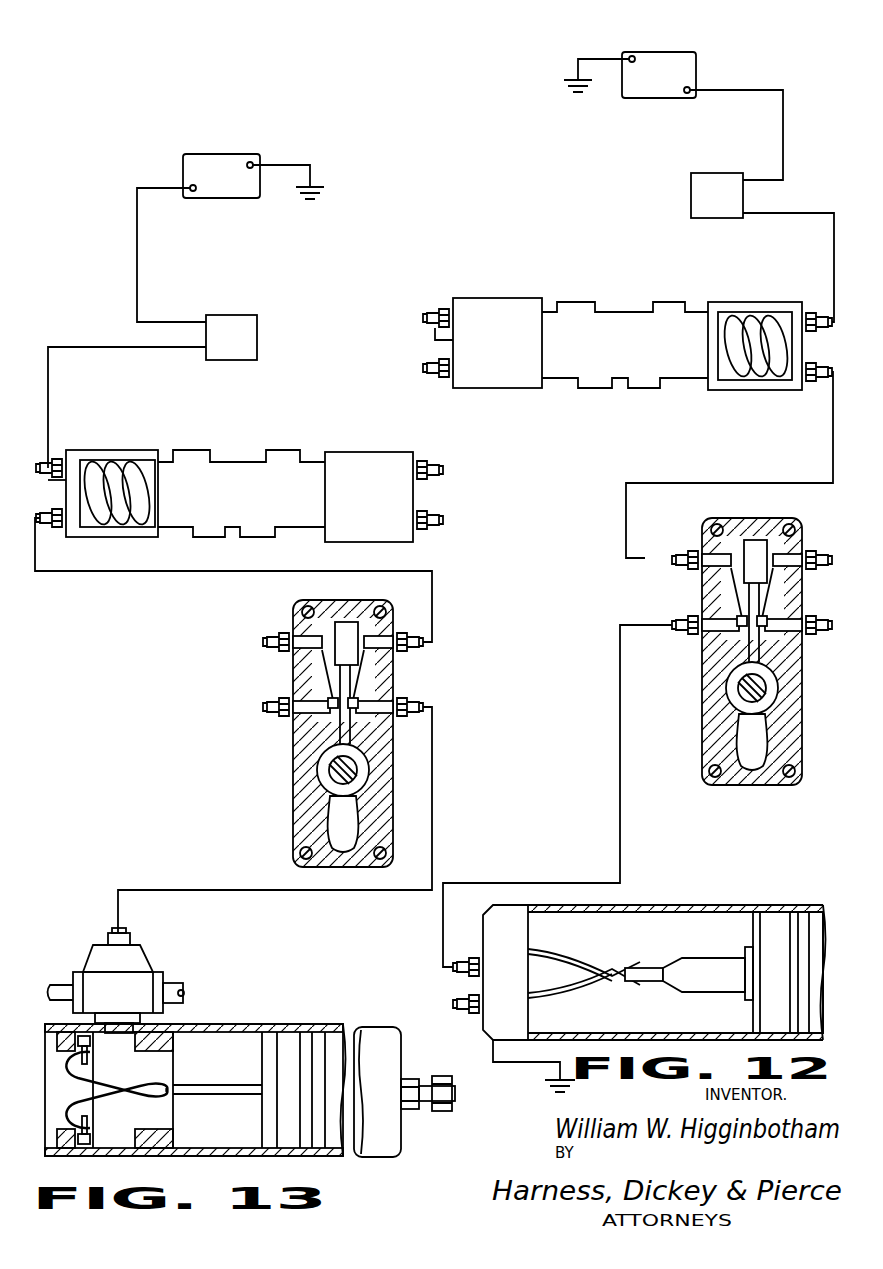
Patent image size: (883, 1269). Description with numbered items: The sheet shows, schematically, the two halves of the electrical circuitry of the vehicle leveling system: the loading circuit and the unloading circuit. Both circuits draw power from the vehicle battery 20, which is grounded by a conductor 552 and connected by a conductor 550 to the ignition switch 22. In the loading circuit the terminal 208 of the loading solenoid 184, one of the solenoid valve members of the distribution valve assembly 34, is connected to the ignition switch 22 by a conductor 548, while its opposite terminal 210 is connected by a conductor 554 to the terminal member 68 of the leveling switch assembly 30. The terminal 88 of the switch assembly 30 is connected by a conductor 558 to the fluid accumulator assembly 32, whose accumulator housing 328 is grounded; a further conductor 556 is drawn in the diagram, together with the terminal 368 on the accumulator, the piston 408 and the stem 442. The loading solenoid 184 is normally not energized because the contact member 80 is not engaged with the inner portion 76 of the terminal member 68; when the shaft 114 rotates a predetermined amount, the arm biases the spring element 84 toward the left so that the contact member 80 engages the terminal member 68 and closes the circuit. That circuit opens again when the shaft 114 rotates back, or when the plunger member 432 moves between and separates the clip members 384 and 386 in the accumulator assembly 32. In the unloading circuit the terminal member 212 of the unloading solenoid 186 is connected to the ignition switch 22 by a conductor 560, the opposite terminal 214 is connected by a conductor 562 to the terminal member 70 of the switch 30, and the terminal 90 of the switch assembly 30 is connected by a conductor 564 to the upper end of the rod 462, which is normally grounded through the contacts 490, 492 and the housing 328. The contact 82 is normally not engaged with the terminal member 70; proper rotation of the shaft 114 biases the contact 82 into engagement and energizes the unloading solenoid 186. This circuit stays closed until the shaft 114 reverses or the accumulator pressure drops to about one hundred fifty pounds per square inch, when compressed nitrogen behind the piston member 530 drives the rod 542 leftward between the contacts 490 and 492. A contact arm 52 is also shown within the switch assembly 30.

In FIG. 13, the battery 20 is at (218, 152).
In FIG. 12, the battery 20 is at (646, 102).
In FIG. 13, the ignition switch 22 is at (242, 313).
In FIG. 12, the ignition switch 22 is at (716, 221).
In FIG. 13, the leveling switch assembly 30 is at (290, 765).
In FIG. 12, the leveling switch assembly 30 is at (700, 740).
In FIG. 13, the fluid accumulator assembly 32 is at (400, 1162).
In FIG. 12, the fluid accumulator assembly 32 is at (768, 893).
In FIG. 13, the distribution valve assembly 34 is at (256, 449).
In FIG. 12, the distribution valve assembly 34 is at (636, 300).
In FIG. 13, the contact arm 52 is at (322, 662).
In FIG. 12, the contact arm 52 is at (780, 578).
In FIG. 12, the terminal member 68 is at (675, 555).
In FIG. 13, the terminal member 70 is at (422, 645).
In FIG. 12, the inner portion of terminal member 76 is at (722, 575).
In FIG. 12, the contact member 80 is at (725, 545).
In FIG. 13, the contact 82 is at (384, 636).
In FIG. 12, the spring element 84 is at (722, 600).
In FIG. 12, the terminal 88 is at (680, 640).
In FIG. 13, the terminal 90 is at (421, 705).
In FIG. 13, the shaft 114 is at (322, 782).
In FIG. 12, the shaft 114 is at (733, 698).
In FIG. 12, the loading solenoid 184 is at (736, 394).
In FIG. 13, the unloading solenoid 186 is at (134, 451).
In FIG. 12, the terminal 208 is at (815, 308).
In FIG. 12, the terminal 210 is at (806, 393).
In FIG. 13, the terminal member 212 is at (56, 462).
In FIG. 13, the terminal 214 is at (54, 530).
In FIG. 13, the accumulator housing 328 is at (320, 1024).
In FIG. 12, the accumulator housing 328 is at (638, 904).
In FIG. 12, the cylinder terminal 368 is at (450, 955).
In FIG. 12, the clip member 384 is at (576, 952).
In FIG. 12, the clip member 386 is at (576, 991).
In FIG. 12, the piston 408 is at (743, 920).
In FIG. 12, the plunger member 432 is at (700, 995).
In FIG. 12, the rod stem 442 is at (648, 967).
In FIG. 13, the rod 462 is at (121, 935).
In FIG. 13, the contact 490 is at (140, 1072).
In FIG. 13, the contact 492 is at (140, 1108).
In FIG. 13, the piston member 530 is at (270, 1156).
In FIG. 13, the rod 542 is at (240, 1086).
In FIG. 12, the conductor 548 is at (770, 214).
In FIG. 13, the conductor 550 is at (137, 262).
In FIG. 12, the conductor 550 is at (783, 143).
In FIG. 13, the conductor 552 is at (292, 162).
In FIG. 12, the conductor 552 is at (598, 59).
In FIG. 12, the conductor 554 is at (705, 483).
In FIG. 12, the conductor 556 is at (620, 737).
In FIG. 12, the conductor 558 is at (507, 1063).
In FIG. 13, the conductor 560 is at (146, 348).
In FIG. 13, the conductor 562 is at (235, 572).
In FIG. 13, the conductor 564 is at (434, 806).